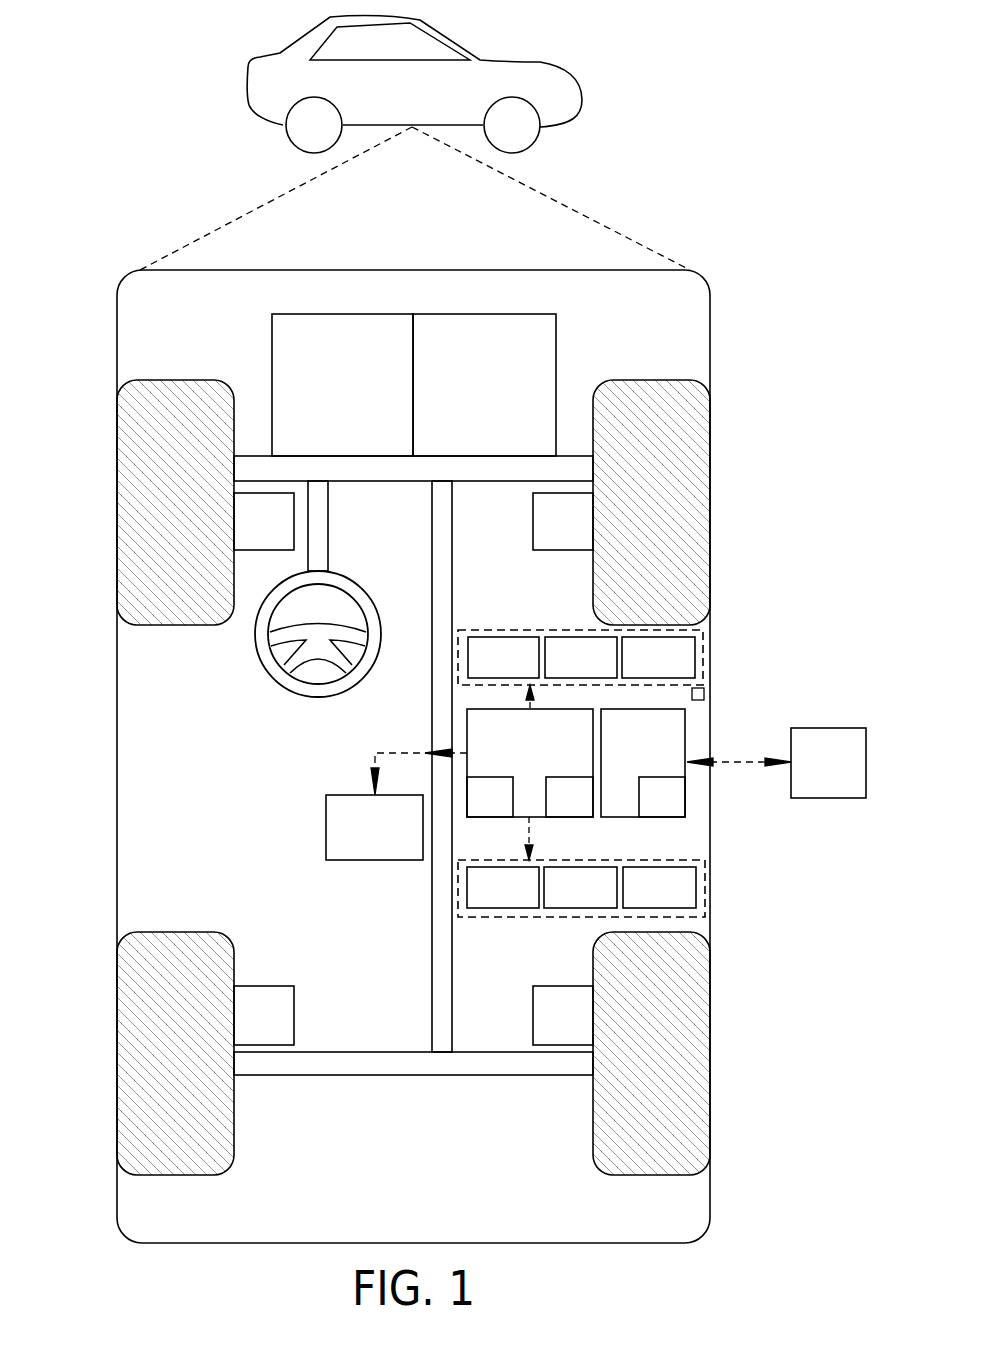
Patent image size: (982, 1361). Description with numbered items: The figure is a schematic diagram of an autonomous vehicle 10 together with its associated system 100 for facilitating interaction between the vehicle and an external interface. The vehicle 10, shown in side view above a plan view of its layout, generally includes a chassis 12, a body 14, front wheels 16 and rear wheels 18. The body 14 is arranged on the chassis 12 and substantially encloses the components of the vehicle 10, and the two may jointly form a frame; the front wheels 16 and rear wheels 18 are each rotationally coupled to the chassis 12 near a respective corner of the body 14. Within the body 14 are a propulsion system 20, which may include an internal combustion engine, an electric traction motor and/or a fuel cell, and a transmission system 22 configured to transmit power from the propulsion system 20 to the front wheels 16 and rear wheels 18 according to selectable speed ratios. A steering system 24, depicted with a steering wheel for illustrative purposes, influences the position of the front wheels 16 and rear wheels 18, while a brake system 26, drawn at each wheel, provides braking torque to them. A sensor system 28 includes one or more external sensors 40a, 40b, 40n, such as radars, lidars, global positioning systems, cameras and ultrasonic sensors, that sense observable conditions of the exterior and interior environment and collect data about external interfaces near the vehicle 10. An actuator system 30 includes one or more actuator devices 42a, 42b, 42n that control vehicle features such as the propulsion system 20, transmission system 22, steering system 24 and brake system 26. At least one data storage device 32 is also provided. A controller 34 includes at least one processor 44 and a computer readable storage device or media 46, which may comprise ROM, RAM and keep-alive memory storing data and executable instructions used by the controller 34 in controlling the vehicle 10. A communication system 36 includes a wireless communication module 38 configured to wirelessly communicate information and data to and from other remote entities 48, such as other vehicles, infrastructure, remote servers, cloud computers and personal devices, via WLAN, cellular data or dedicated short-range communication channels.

The vehicle 10 is at (397, 102).
The vehicle system 100 is at (701, 245).
The chassis 12 is at (432, 960).
The body 14 is at (117, 757).
The front wheels 16 is at (176, 380).
The rear wheels 18 is at (177, 1175).
The propulsion system 20 is at (328, 399).
The transmission system 22 is at (470, 399).
The steering system 24 is at (356, 525).
The brake system 26 is at (249, 534).
The sensor system 28 is at (581, 640).
The actuator system 30 is at (581, 910).
The data storage device 32 is at (359, 840).
The controller 34 is at (514, 757).
The communication system 36 is at (628, 757).
The wireless communication module 38 is at (646, 810).
The external sensor 40a is at (482, 669).
The external sensor 40b is at (560, 669).
The external sensor 40n is at (638, 669).
The actuator device 42a is at (482, 899).
The actuator device 42b is at (559, 899).
The actuator device 42n is at (639, 899).
The processor 44 is at (474, 810).
The computer readable storage device or media 46 is at (554, 810).
The remote entities 48 is at (813, 776).